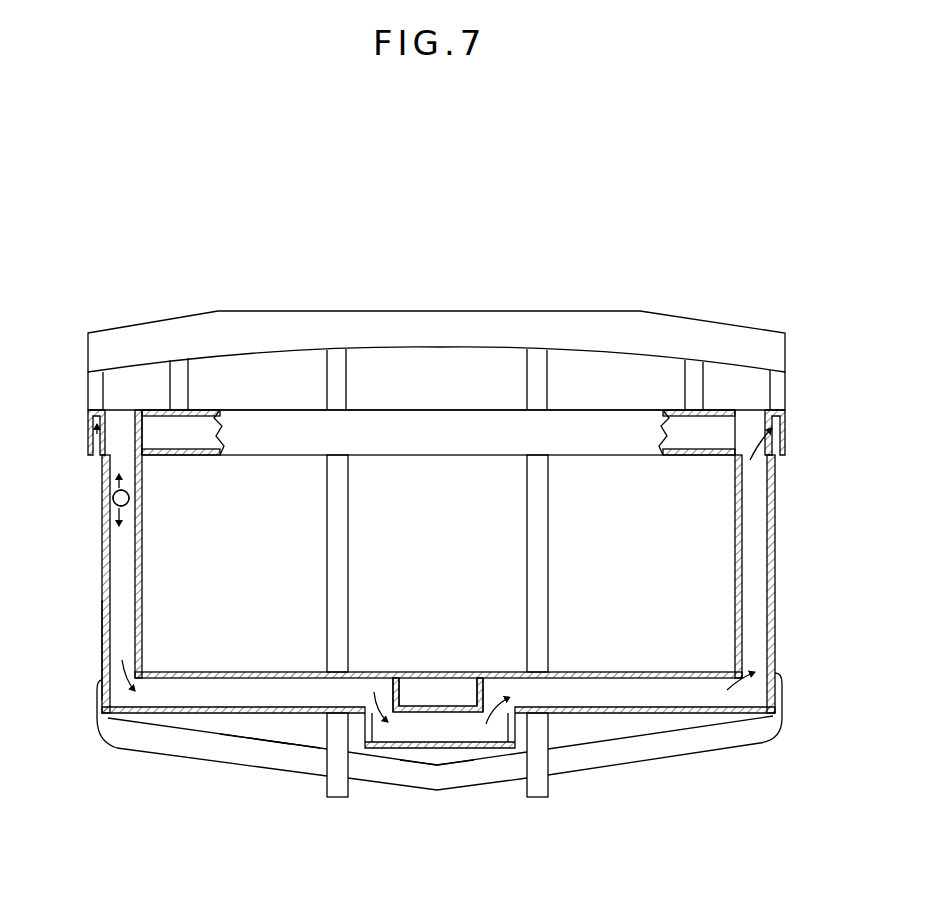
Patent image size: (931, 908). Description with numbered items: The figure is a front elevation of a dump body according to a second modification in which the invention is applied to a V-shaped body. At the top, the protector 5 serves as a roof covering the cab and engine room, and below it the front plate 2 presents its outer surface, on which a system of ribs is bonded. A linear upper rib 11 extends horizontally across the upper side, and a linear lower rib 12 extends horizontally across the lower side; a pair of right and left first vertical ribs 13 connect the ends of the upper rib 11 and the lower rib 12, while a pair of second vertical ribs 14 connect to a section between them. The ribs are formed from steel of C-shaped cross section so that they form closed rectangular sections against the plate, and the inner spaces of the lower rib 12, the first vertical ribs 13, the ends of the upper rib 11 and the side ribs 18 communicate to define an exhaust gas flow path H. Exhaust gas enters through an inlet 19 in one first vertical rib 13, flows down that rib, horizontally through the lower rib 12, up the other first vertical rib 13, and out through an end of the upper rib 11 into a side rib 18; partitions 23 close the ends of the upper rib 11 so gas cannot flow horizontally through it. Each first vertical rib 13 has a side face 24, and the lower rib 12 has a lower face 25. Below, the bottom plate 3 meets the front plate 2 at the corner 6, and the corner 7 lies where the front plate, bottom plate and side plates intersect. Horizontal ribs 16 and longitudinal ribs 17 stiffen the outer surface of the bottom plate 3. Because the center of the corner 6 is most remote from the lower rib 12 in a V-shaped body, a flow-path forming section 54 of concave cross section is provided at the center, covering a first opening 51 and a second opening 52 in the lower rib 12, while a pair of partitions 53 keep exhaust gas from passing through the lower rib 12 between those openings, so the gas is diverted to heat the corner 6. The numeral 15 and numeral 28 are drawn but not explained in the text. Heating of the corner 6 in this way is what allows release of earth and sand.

The protector 5 is at (598, 322).
The support posts 15 is at (88, 385).
The upper rib 11 is at (443, 410).
The partition 23 is at (144, 430).
The side rib 18 is at (88, 433).
The first vertical rib 13 is at (102, 588).
The side face 24 is at (102, 622).
The front plate 2 is at (727, 532).
The inner basin bottom 28 is at (255, 672).
The exhaust gas flow path H is at (120, 557).
The inlet 19 is at (145, 496).
The second vertical rib 14 is at (327, 543).
The bottom plate 3 is at (650, 735).
The lower rib 12 is at (448, 672).
The first opening 51 is at (385, 690).
The second opening 52 is at (490, 690).
The partition 53 is at (400, 695).
The longitudinal rib 17 is at (340, 800).
The horizontal rib 16 is at (188, 752).
The corner 7 is at (105, 735).
The lower face 25 is at (257, 713).
The corner 6 is at (293, 733).
The flow-path forming section 54 is at (437, 766).